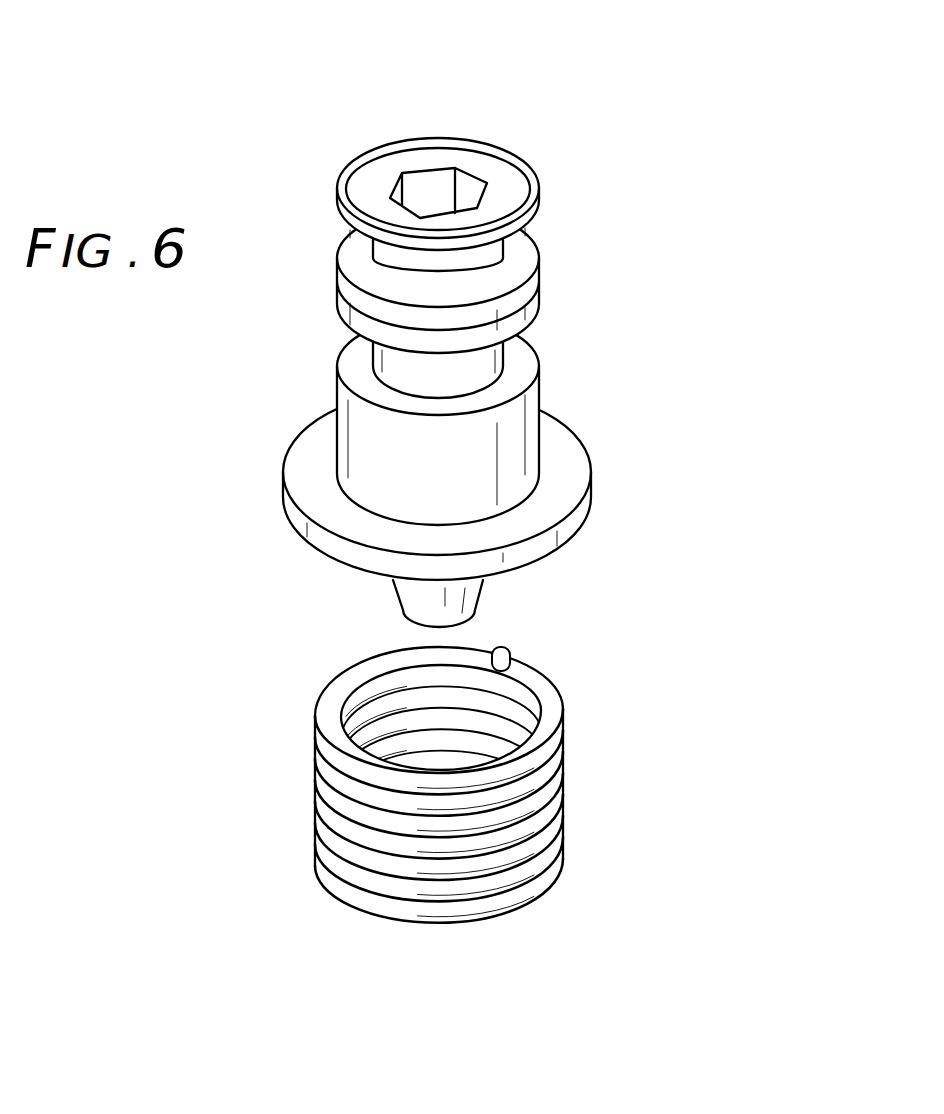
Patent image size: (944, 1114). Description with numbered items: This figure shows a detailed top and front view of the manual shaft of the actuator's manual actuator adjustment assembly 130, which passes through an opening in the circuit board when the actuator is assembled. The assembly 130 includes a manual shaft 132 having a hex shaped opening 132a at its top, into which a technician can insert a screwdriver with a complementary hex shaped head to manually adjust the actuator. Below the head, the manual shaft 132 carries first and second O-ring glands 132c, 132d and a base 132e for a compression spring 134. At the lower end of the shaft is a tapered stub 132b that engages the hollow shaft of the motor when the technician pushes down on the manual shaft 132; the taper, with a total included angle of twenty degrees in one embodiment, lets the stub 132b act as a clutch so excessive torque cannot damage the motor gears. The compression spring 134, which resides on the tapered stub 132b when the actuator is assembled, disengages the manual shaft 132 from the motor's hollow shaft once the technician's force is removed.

The manual actuator adjustment assembly 130 is at (531, 45).
The manual shaft 132 is at (535, 367).
The hex shaped opening 132a is at (443, 190).
The tapered stub 132b is at (466, 603).
The first O-ring gland 132c is at (520, 267).
The second O-ring gland 132d is at (490, 366).
The base 132e is at (590, 508).
The compression spring 134 is at (563, 755).